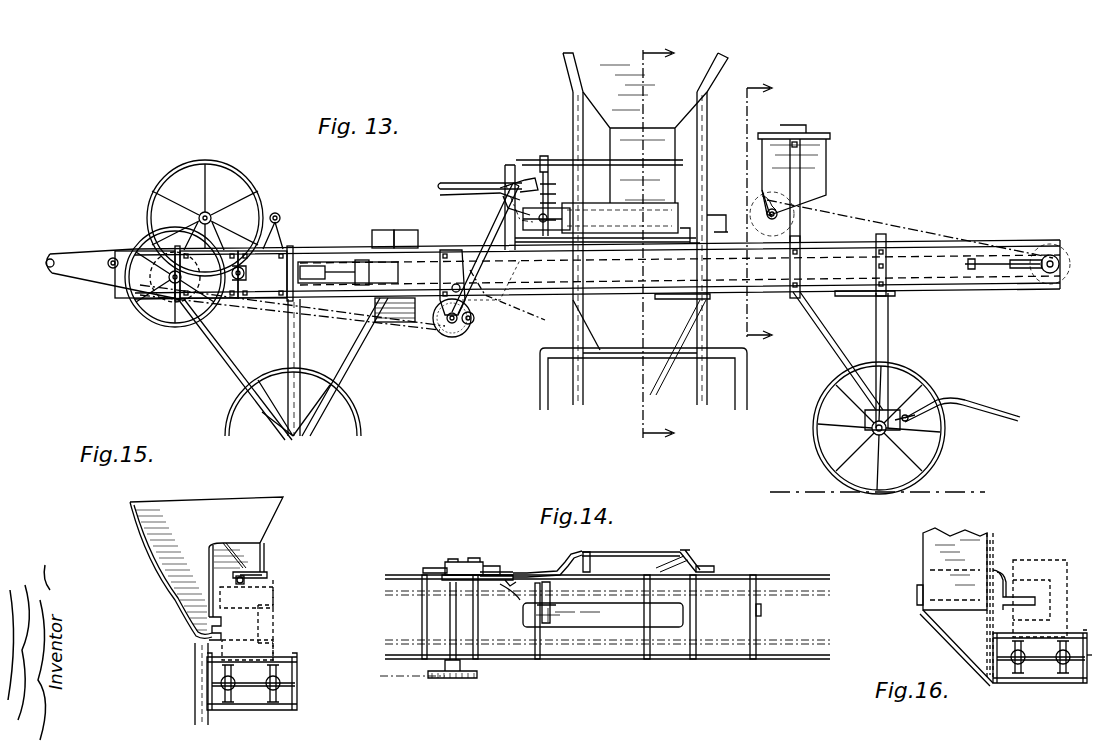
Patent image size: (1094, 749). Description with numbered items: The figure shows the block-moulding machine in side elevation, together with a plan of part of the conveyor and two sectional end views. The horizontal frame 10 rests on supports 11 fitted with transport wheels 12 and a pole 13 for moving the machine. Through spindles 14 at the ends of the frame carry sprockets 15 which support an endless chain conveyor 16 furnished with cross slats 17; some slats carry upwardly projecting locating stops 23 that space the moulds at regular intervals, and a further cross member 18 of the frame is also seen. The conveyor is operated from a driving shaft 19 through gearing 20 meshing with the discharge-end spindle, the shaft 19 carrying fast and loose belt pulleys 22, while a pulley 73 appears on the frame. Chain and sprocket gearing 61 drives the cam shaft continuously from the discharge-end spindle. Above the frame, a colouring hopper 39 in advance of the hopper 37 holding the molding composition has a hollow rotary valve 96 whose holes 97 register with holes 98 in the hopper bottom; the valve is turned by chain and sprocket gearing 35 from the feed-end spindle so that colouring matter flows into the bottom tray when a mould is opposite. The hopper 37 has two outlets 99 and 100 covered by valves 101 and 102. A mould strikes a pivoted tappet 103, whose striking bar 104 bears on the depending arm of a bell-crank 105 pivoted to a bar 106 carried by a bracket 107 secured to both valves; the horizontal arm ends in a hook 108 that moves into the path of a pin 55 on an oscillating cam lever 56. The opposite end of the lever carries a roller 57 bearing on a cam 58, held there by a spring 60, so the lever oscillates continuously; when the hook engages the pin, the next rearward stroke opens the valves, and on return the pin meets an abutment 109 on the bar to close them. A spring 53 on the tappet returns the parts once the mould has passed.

In FIG. 13, the horizontal frame 10 is at (870, 248).
In FIG. 14, the horizontal frame 10 is at (760, 575).
In FIG. 15, the horizontal frame 10 is at (297, 680).
In FIG. 16, the horizontal frame 10 is at (1042, 656).
In FIG. 13, the supports 11 is at (288, 330).
In FIG. 13, the transport wheels 12 is at (310, 378).
In FIG. 13, the pole 13 is at (968, 402).
In FIG. 13, the through spindles 14 is at (1048, 285).
In FIG. 15, the through spindles 14 is at (253, 692).
In FIG. 16, the through spindles 14 is at (1041, 666).
In FIG. 13, the sprockets 15 is at (668, 241).
In FIG. 15, the sprockets 15 is at (270, 676).
In FIG. 16, the sprockets 15 is at (1058, 650).
In FIG. 13, the endless chain conveyor 16 is at (769, 212).
In FIG. 14, the cross slats 17 is at (420, 618).
In FIG. 15, the cross slats 17 is at (292, 660).
In FIG. 14, the cross bar 18 is at (724, 650).
In FIG. 13, the driving shaft 19 is at (336, 266).
In FIG. 13, the gearing 20 is at (150, 232).
In FIG. 13, the fast and loose belt pulleys 22 is at (392, 230).
In FIG. 14, the locating stops 23 is at (762, 610).
In FIG. 13, the chain and sprocket gearing 35 is at (940, 228).
In FIG. 16, the chain and sprocket gearing 35 is at (987, 640).
In FIG. 13, the hopper 37 is at (643, 231).
In FIG. 15, the hopper 37 is at (206, 567).
In FIG. 13, the feed box 39 is at (794, 184).
In FIG. 16, the feed box 39 is at (955, 604).
In FIG. 14, the spring 53 is at (682, 552).
In FIG. 13, the pin 55 is at (440, 190).
In FIG. 13, the oscillating cam lever 56 is at (455, 248).
In FIG. 14, the oscillating cam lever 56 is at (498, 570).
In FIG. 13, the roller 57 is at (475, 318).
In FIG. 14, the roller 57 is at (462, 560).
In FIG. 13, the cam 58 is at (448, 333).
In FIG. 14, the cam 58 is at (428, 567).
In FIG. 13, the spring 60 is at (520, 312).
In FIG. 13, the chain and sprocket gearing 61 is at (315, 312).
In FIG. 14, the chain and sprocket gearing 61 is at (440, 677).
In FIG. 13, the idler pulley 73 is at (60, 278).
In FIG. 13, the hollow rotary valve 96 is at (766, 214).
In FIG. 16, the hollow rotary valve 96 is at (1003, 590).
In FIG. 13, the holes 97 is at (758, 197).
In FIG. 13, the holes 98 is at (762, 190).
In FIG. 15, the outlet 99 is at (272, 574).
In FIG. 15, the outlet 100 is at (208, 634).
In FIG. 13, the valve 101 is at (596, 172).
In FIG. 14, the valve 101 is at (603, 615).
In FIG. 15, the valve 101 is at (272, 578).
In FIG. 13, the valve 102 is at (758, 190).
In FIG. 14, the valve 102 is at (570, 562).
In FIG. 15, the valve 102 is at (238, 627).
In FIG. 16, the valve 102 is at (1040, 598).
In FIG. 13, the pivoted tappet 103 is at (700, 238).
In FIG. 14, the pivoted tappet 103 is at (712, 566).
In FIG. 13, the striking bar 104 is at (560, 246).
In FIG. 14, the striking bar 104 is at (636, 556).
In FIG. 13, the bell-crank 105 is at (500, 205).
In FIG. 14, the bell-crank 105 is at (514, 590).
In FIG. 13, the bar 106 is at (525, 183).
In FIG. 13, the bracket 107 is at (542, 172).
In FIG. 14, the bracket 107 is at (535, 612).
In FIG. 13, the hook 108 is at (512, 182).
In FIG. 13, the abutment 109 is at (470, 198).